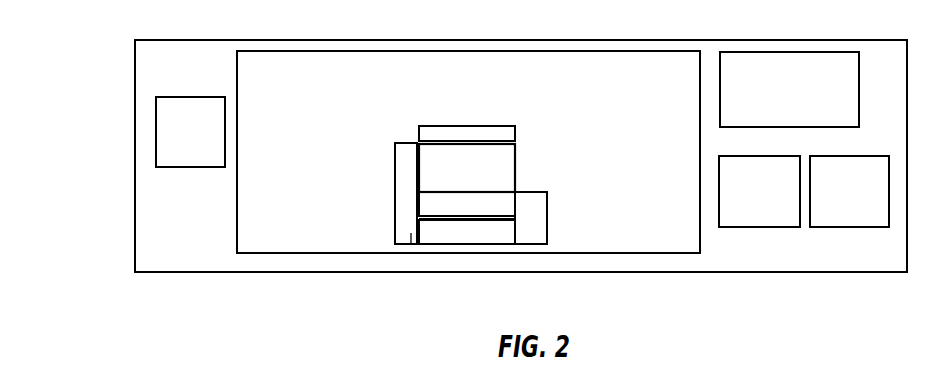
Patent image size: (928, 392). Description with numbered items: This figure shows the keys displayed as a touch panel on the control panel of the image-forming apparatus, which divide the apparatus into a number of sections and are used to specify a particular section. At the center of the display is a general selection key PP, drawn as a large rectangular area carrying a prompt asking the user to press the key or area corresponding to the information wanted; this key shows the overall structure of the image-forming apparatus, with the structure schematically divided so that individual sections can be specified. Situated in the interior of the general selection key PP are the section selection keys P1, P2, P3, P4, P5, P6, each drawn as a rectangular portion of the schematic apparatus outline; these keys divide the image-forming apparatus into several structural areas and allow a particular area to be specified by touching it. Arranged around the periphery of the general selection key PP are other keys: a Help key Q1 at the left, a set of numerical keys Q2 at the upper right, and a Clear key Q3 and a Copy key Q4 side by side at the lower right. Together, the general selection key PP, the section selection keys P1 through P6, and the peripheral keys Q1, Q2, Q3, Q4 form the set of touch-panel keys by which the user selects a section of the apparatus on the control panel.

The general selection key PP is at (577, 51).
The Help key Q1 is at (195, 167).
The set of numerical keys Q2 is at (730, 52).
The Clear key Q3 is at (752, 227).
The Copy key Q4 is at (840, 227).
The section selection key P1 is at (395, 180).
The section selection key P2 is at (515, 134).
The section selection key P3 is at (515, 170).
The section selection key P4 is at (505, 205).
The section selection key P5 is at (411, 233).
The section selection key P6 is at (534, 235).